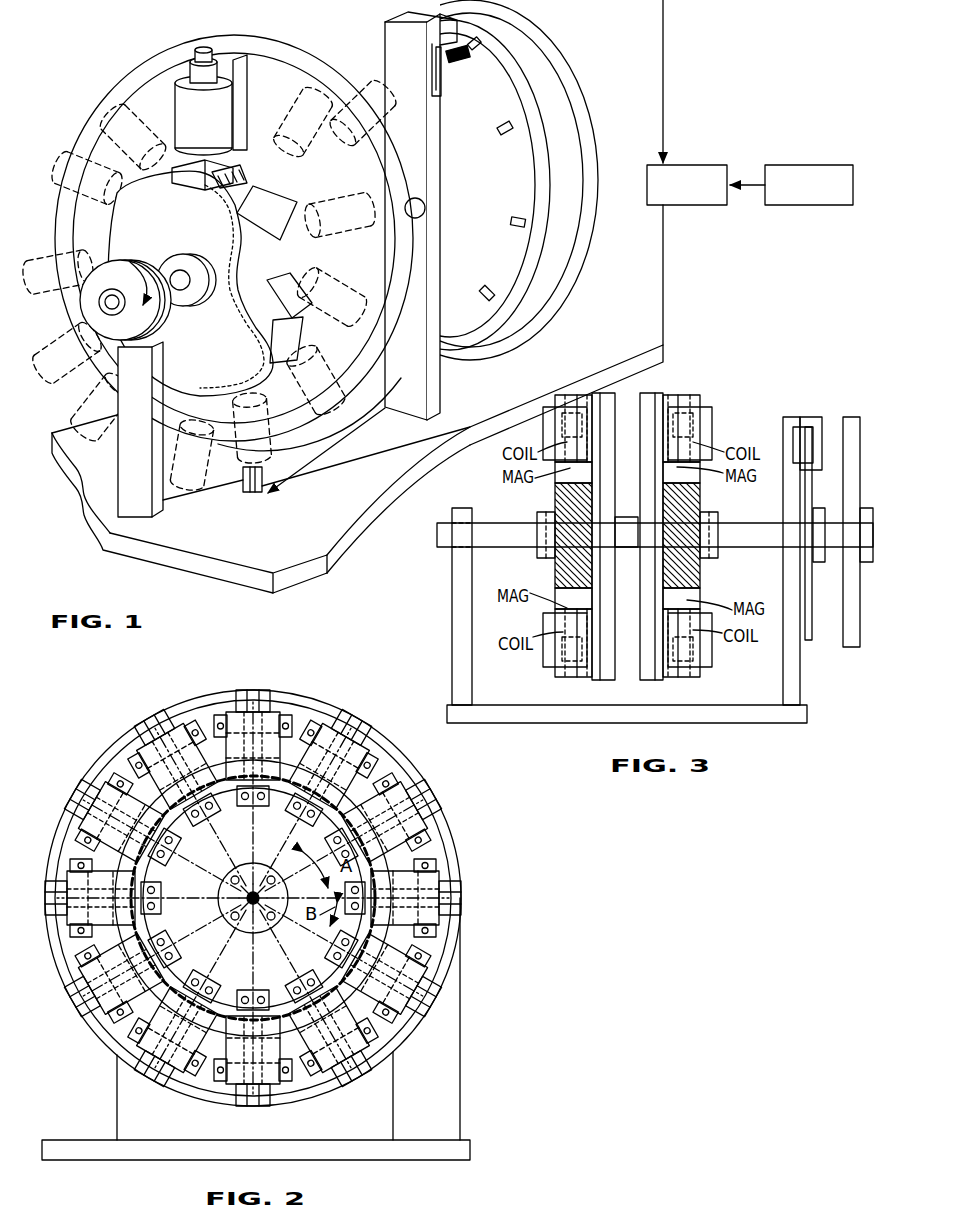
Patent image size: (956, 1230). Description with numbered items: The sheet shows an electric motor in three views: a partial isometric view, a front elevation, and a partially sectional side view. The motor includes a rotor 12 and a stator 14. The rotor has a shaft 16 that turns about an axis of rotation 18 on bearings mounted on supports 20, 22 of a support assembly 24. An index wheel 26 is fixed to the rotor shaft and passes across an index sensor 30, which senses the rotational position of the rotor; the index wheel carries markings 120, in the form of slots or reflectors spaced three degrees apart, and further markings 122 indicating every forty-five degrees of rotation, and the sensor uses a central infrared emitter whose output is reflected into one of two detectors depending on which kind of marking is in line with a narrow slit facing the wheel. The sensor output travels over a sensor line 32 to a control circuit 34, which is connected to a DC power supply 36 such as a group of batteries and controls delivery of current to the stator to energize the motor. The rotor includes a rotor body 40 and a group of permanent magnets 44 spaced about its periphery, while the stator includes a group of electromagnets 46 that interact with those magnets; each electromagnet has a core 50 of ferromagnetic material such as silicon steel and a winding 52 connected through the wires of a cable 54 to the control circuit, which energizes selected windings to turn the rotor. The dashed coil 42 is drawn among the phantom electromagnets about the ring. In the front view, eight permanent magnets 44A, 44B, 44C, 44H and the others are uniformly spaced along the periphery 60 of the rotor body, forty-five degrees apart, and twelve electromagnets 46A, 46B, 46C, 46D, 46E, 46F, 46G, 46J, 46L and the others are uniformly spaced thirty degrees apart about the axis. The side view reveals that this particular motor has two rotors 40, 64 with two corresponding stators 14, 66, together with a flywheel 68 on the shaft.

In FIG. 1, the rotor 12 is at (122, 187).
In FIG. 1, the stator 14 is at (113, 89).
In FIG. 3, the stator 14 is at (582, 677).
In FIG. 1, the shaft 16 is at (116, 280).
In FIG. 1, the axis of rotation 18 is at (104, 301).
In FIG. 2, the axis of rotation 18 is at (220, 886).
In FIG. 1, the support 20 is at (136, 502).
In FIG. 1, the support 22 is at (413, 405).
In FIG. 1, the support assembly 24 is at (176, 562).
In FIG. 1, the index wheel 26 is at (518, 80).
In FIG. 3, the index wheel 26 is at (808, 640).
In FIG. 1, the index sensor 30 is at (411, 14).
In FIG. 3, the index sensor 30 is at (817, 417).
In FIG. 1, the sensor line 32 is at (663, 90).
In FIG. 1, the control circuit 34 is at (673, 163).
In FIG. 1, the DC power supply 36 is at (830, 164).
In FIG. 3, the rotor body 40 is at (560, 575).
In FIG. 1, the electromagnet coil 42 is at (247, 378).
In FIG. 1, the permanent magnets 44 is at (233, 162).
In FIG. 1, the electromagnets 46 is at (238, 91).
In FIG. 1, the core 50 is at (171, 150).
In FIG. 1, the winding 52 is at (232, 62).
In FIG. 1, the cable 54 is at (663, 223).
In FIG. 2, the periphery 60 is at (210, 720).
In FIG. 3, the rotor 64 is at (700, 567).
In FIG. 3, the stator 66 is at (670, 677).
In FIG. 1, the flywheel 68 is at (557, 18).
In FIG. 3, the flywheel 68 is at (850, 647).
In FIG. 1, the markings 120 is at (463, 57).
In FIG. 1, the markings 122 is at (511, 123).
In FIG. 2, the permanent magnet 44A is at (272, 775).
In FIG. 2, the permanent magnet 44B is at (347, 823).
In FIG. 2, the permanent magnet 44C is at (438, 873).
In FIG. 2, the permanent magnet 44H is at (130, 760).
In FIG. 2, the electromagnet 46A is at (276, 710).
In FIG. 2, the electromagnet 46B is at (358, 778).
In FIG. 2, the electromagnet 46C is at (432, 810).
In FIG. 2, the electromagnet 46D is at (447, 874).
In FIG. 2, the electromagnet 46E is at (395, 1020).
In FIG. 2, the electromagnet 46F is at (333, 1088).
In FIG. 2, the electromagnet 46G is at (240, 1093).
In FIG. 2, the electromagnet 46J is at (52, 877).
In FIG. 2, the electromagnet 46L is at (180, 717).